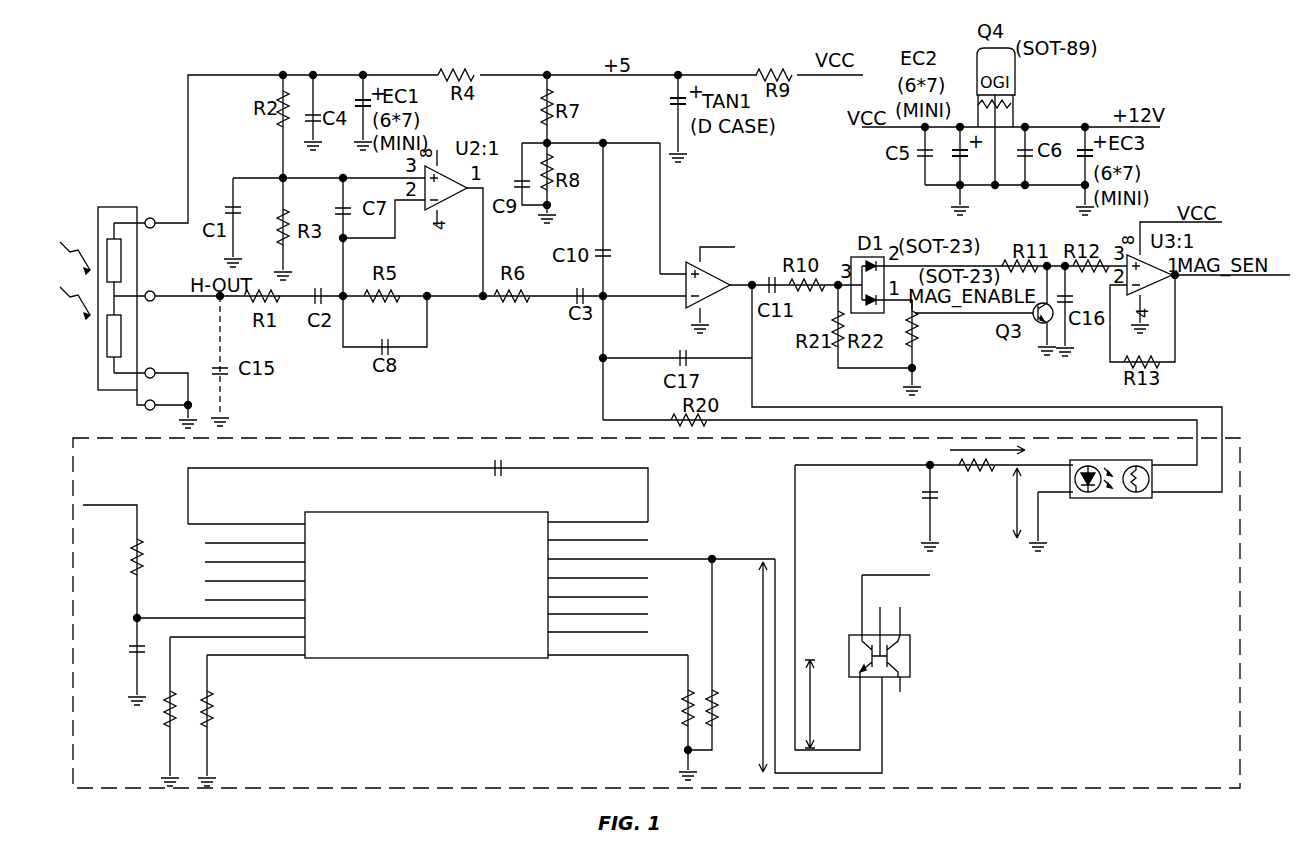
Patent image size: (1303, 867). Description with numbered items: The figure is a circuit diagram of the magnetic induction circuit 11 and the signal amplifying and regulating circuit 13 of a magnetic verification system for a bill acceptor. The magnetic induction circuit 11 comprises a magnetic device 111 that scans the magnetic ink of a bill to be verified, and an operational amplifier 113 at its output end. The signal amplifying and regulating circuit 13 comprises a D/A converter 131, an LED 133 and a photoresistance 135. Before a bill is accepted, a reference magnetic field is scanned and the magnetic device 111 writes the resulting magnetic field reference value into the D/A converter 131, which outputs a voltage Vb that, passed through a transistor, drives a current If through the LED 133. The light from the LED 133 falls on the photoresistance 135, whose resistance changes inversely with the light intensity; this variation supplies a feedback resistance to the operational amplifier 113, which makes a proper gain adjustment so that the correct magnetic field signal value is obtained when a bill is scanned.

The magnetic induction circuit 11 is at (150, 125).
The magnetic device 111 is at (134, 203).
The operational amplifier 113 is at (689, 258).
The signal amplifying and regulating circuit 13 is at (425, 438).
The D/A converter 131 is at (452, 645).
The LED 133 is at (1084, 498).
The photoresistance 135 is at (1135, 498).